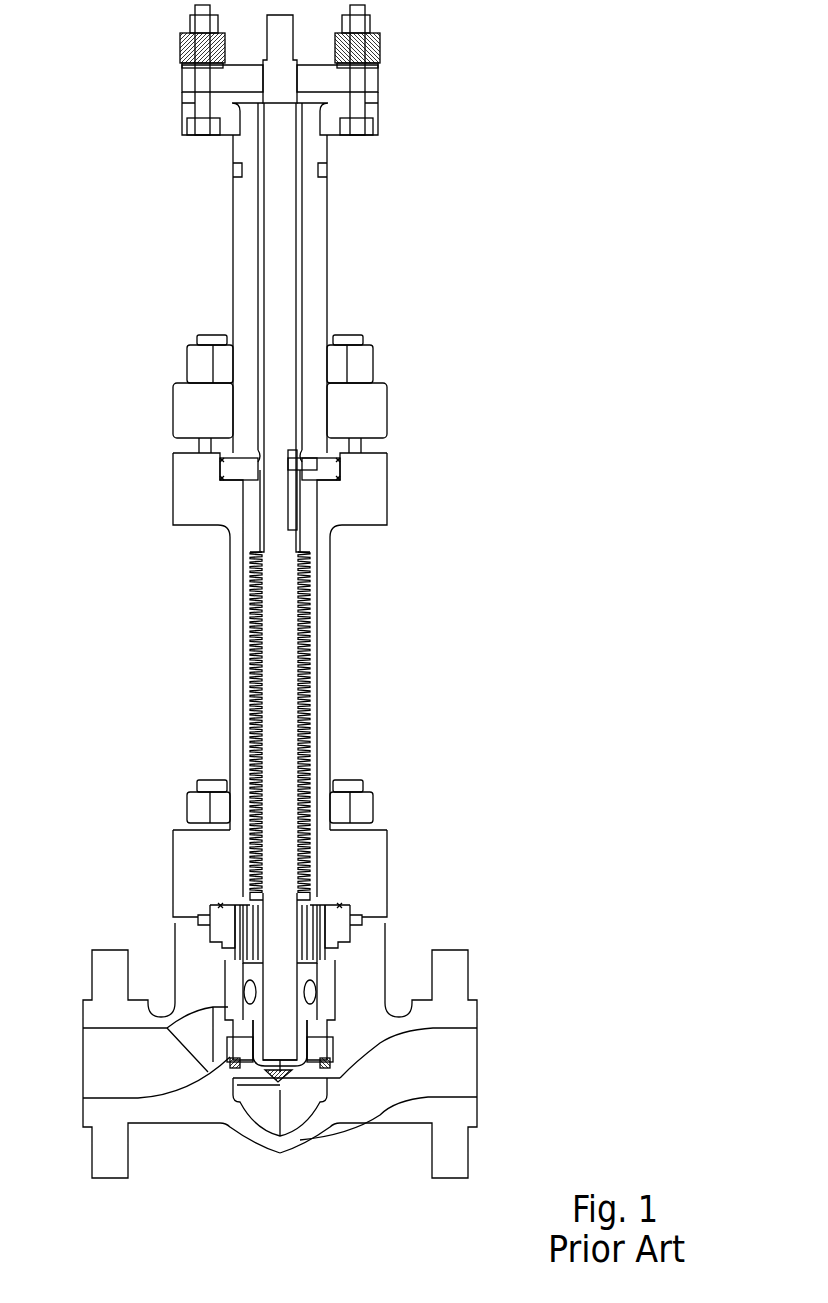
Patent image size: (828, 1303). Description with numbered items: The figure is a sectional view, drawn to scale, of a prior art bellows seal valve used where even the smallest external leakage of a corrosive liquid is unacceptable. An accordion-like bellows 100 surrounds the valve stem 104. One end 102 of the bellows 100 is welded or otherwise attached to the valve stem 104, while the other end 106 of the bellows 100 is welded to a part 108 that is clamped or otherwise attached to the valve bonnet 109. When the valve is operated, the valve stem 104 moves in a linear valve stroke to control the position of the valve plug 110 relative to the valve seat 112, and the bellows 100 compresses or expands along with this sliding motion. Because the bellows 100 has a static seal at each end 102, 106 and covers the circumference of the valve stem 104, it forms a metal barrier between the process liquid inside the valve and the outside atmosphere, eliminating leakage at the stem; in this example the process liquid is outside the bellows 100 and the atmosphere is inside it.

The bellows 100 is at (318, 690).
The end of the bellows 102 is at (243, 897).
The valve stem 104 is at (275, 693).
The other end of the bellows 106 is at (313, 555).
The part 108 is at (248, 542).
The valve bonnet 109 is at (232, 443).
The valve plug 110 is at (288, 1082).
The valve seat 112 is at (318, 1055).